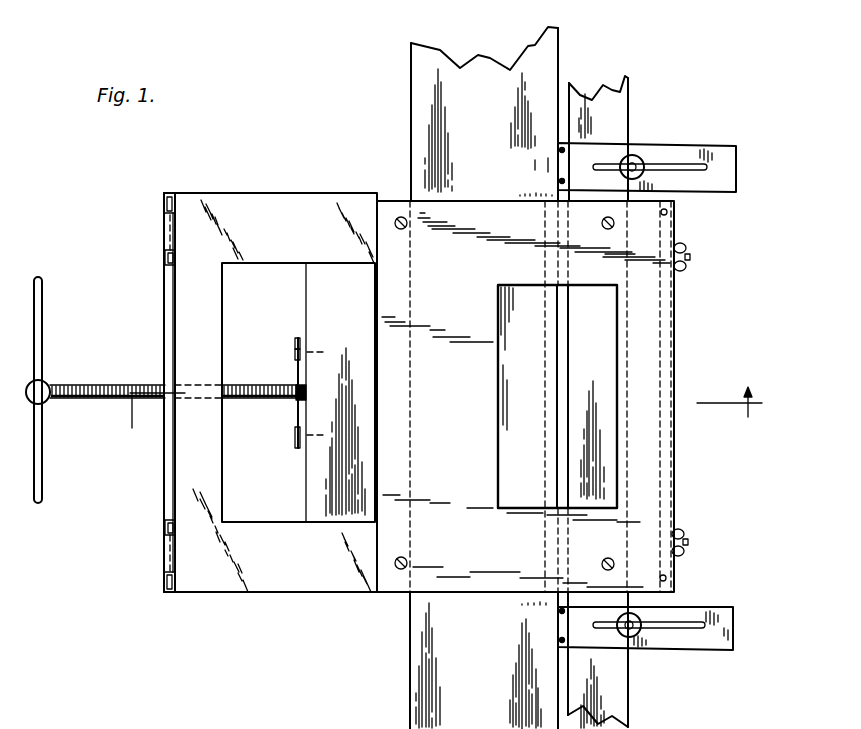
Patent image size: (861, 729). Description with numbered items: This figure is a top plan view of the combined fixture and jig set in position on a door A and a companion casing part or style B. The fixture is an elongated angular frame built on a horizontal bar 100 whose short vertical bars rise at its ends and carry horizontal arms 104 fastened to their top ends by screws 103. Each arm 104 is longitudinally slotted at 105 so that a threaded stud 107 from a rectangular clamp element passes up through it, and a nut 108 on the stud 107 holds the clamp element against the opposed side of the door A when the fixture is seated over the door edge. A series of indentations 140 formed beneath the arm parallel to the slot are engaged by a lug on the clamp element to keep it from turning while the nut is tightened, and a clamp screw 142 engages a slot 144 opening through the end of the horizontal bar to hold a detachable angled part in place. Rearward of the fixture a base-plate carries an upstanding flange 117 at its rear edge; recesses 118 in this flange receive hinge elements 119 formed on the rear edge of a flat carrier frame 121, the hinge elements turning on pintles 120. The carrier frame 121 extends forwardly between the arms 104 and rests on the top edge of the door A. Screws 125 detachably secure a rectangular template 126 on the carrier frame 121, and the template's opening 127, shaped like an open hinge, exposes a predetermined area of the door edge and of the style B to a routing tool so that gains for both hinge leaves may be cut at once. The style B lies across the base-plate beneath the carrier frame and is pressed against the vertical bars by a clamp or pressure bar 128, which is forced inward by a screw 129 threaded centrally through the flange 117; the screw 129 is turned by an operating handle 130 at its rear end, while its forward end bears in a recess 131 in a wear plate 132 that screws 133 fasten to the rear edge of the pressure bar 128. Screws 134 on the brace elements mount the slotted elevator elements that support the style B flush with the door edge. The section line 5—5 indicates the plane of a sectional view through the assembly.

The door A is at (580, 92).
The companion casing part or style B is at (428, 61).
The section line 5- 5 is at (440, 418).
The horizontal bar 100 is at (548, 165).
The screws 103 is at (565, 181).
The horizontal arms 104 is at (732, 151).
The slot 105 is at (717, 166).
The threaded stud 107 is at (635, 158).
The nut 108 is at (642, 163).
The flange 117 is at (175, 262).
The recesses 118 is at (164, 200).
The hinge elements 119 is at (164, 234).
The pintles 120 is at (170, 192).
The carrier frame 121 is at (277, 580).
The screws 125 is at (400, 217).
The template 126 is at (425, 594).
The opening 127 is at (510, 505).
The clamp or pressure bar 128 is at (312, 472).
The screw 129 is at (77, 388).
The operating handle 130 is at (43, 287).
The recess 131 is at (298, 405).
The wear plate 132 is at (297, 362).
The screws 133 is at (298, 347).
The screws 134 is at (650, 304).
The series of indentations 140 is at (690, 255).
The clamp screw 142 is at (688, 267).
The slot 144 is at (677, 455).